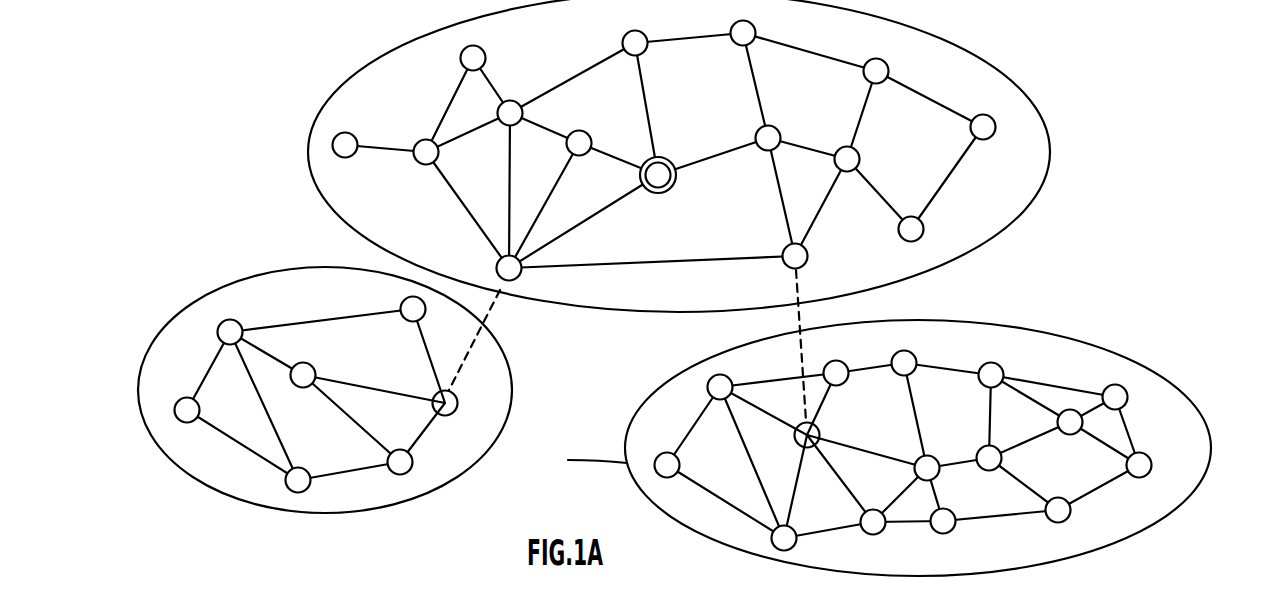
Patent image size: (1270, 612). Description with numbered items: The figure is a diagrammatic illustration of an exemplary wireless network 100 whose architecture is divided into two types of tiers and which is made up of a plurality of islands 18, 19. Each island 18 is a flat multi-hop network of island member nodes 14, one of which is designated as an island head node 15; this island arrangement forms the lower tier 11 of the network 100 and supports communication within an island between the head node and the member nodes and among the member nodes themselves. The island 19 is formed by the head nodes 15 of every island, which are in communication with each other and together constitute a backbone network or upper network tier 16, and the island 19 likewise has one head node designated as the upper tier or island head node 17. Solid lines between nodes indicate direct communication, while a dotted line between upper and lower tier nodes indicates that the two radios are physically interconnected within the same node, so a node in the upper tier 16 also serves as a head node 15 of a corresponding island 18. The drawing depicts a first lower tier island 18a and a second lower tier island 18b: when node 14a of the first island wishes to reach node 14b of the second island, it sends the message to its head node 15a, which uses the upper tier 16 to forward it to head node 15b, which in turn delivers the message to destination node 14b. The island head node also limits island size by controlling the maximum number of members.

The wireless network 100 is at (196, 190).
The island 19 is at (293, 97).
The upper network tier 16 is at (1030, 98).
The island head node 17 is at (673, 162).
The island head node 15 is at (917, 240).
The head node 15a is at (497, 267).
The head node 15b is at (807, 252).
The island 18 is at (180, 288).
The first lower tier island 18a is at (158, 443).
The second lower tier island 18b is at (1213, 443).
The lower tier 11 is at (498, 440).
The island member node 14 is at (287, 490).
The node 14a is at (410, 473).
The node 14b is at (839, 362).